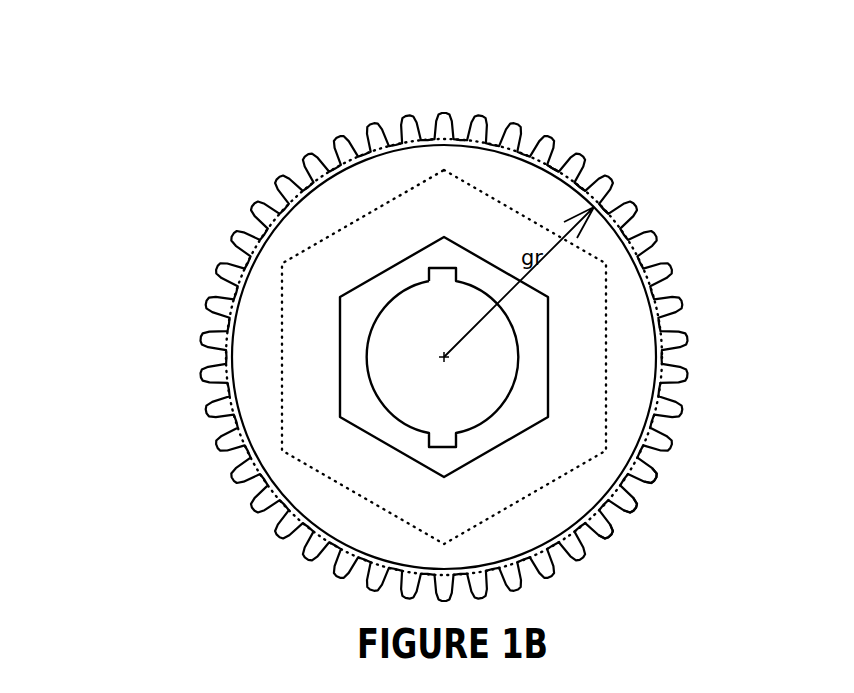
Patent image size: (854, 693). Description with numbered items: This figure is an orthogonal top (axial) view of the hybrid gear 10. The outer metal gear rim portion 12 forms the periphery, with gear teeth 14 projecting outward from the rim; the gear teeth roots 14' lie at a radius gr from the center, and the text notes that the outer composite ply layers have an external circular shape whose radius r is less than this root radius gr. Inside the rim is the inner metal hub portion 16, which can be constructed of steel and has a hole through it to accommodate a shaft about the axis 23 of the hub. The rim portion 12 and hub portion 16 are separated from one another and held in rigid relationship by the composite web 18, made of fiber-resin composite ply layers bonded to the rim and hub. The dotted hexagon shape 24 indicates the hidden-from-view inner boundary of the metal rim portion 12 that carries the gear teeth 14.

The hybrid gear 10 is at (416, 78).
The outer metal gear rim portion 12 is at (658, 330).
The gear teeth 14 is at (670, 495).
The gear teeth roots 14' is at (619, 135).
The inner hub portion 16 is at (537, 307).
The composite web 18 is at (353, 452).
The axis 23 is at (444, 357).
The dotted hexagon shape 24 is at (390, 200).